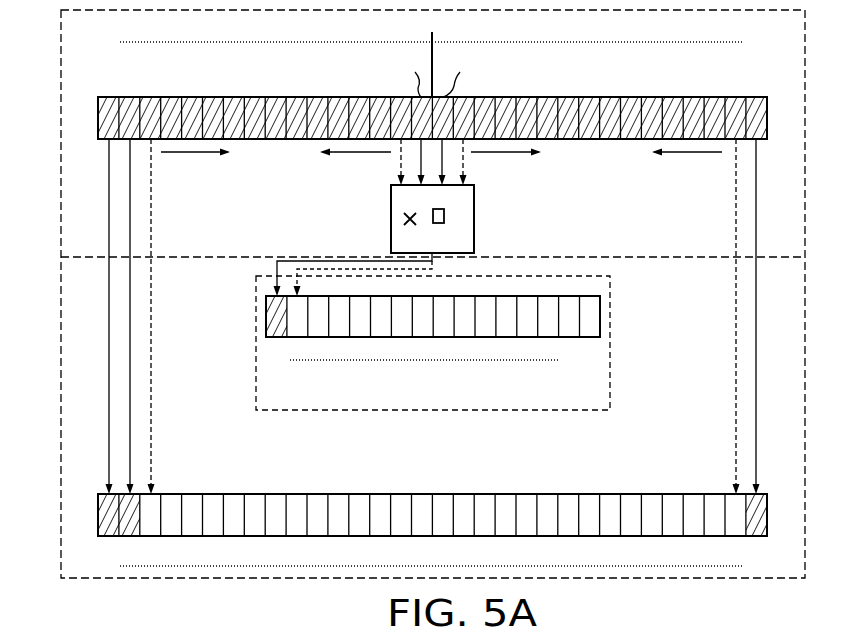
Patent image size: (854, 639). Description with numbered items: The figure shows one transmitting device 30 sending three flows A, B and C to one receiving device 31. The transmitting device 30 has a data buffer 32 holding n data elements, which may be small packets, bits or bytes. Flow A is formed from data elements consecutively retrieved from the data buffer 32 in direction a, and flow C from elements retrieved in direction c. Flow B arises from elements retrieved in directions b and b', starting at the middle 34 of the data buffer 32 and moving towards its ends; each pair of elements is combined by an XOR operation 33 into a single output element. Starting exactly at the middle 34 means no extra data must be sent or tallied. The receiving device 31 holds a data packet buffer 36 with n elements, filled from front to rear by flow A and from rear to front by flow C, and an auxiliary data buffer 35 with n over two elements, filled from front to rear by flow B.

The transmitting device 30 is at (61, 188).
The receiving device 31 is at (61, 340).
The data buffer 32 is at (98, 120).
The XOR operation 33 is at (391, 223).
The middle of the data buffer 34 is at (432, 38).
The auxiliary data buffer 35 is at (602, 325).
The data packet buffer 36 is at (95, 522).